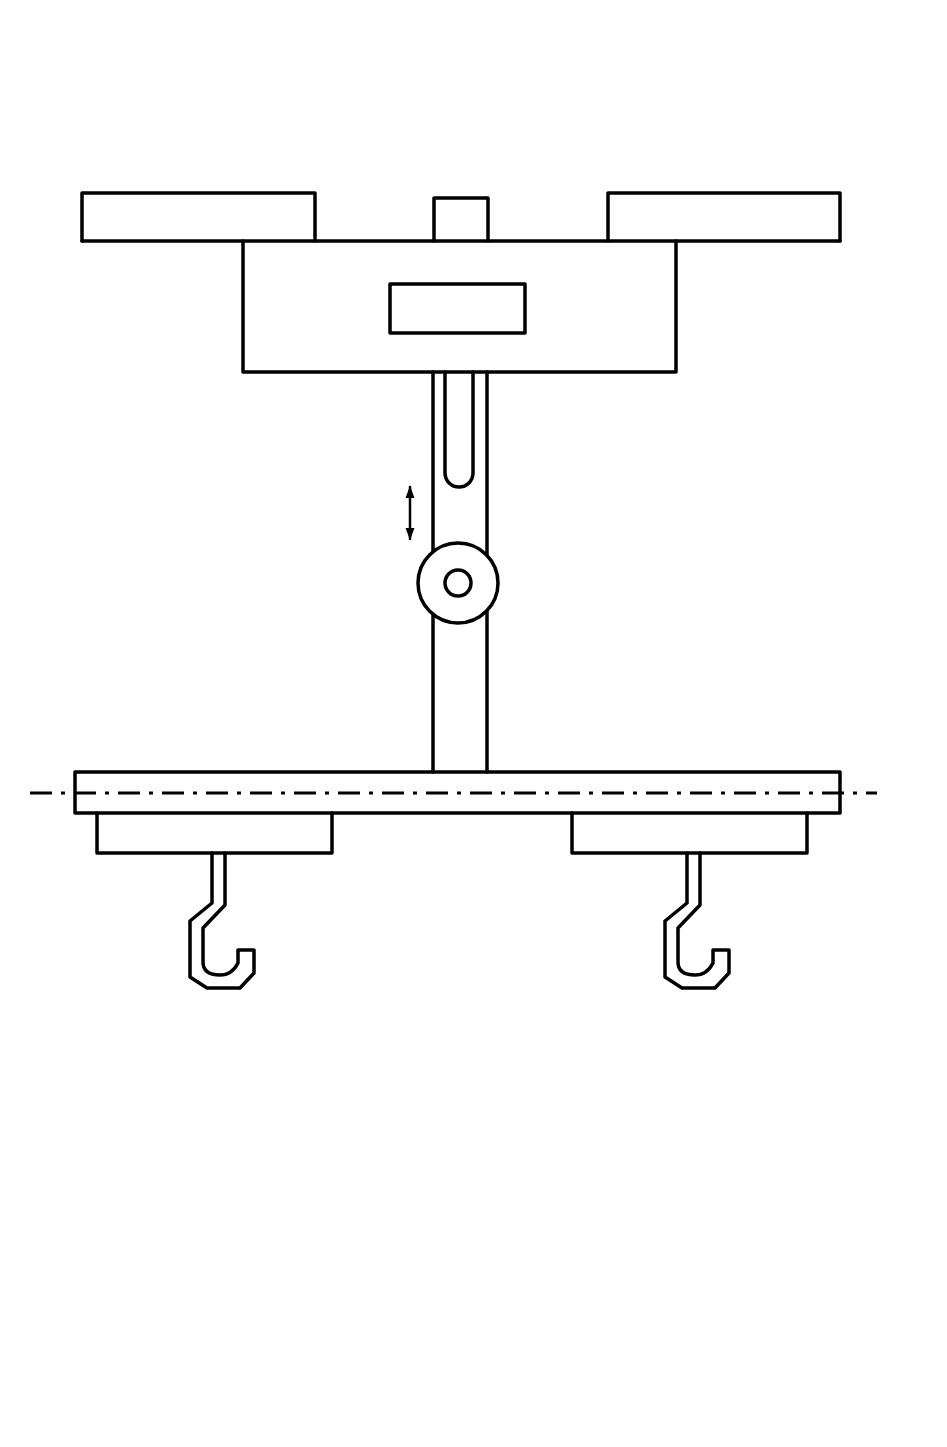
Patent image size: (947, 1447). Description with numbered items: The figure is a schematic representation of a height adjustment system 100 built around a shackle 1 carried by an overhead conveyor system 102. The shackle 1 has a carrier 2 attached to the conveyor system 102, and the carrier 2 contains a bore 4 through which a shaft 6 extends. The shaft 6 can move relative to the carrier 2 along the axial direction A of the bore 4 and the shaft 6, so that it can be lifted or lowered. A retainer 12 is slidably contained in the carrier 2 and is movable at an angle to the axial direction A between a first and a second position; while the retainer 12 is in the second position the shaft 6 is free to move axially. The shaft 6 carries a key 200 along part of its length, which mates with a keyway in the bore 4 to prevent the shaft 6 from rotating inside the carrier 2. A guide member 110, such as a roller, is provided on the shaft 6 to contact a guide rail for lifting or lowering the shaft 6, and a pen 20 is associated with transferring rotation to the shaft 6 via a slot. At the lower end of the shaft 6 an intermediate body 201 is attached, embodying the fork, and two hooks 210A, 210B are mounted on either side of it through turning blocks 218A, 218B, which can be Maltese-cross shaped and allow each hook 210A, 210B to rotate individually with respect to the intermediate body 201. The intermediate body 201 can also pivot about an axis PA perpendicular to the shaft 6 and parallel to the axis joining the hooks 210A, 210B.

The height adjustment system 100 is at (625, 64).
The conveyor system 102 is at (203, 190).
The bore 4 is at (493, 238).
The shackle 1 is at (700, 291).
The carrier 2 is at (291, 278).
The retainer 12 is at (412, 282).
The pen 20 is at (451, 572).
The shaft 6 is at (489, 527).
The key 200 is at (457, 448).
The guide member 110 is at (503, 571).
The axial direction A is at (404, 512).
The intermediate body 201 is at (307, 761).
The pivot axis PA is at (649, 786).
The turning block 218A is at (118, 880).
The turning block 218B is at (581, 873).
The hook 210A is at (217, 995).
The hook 210B is at (692, 995).